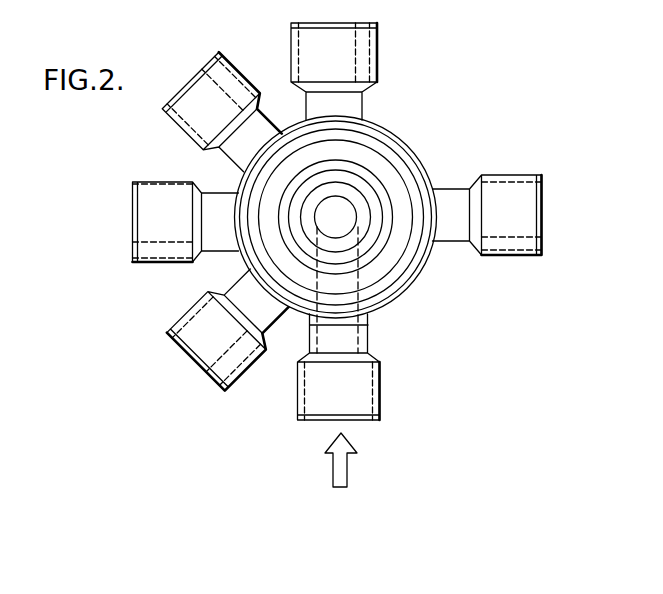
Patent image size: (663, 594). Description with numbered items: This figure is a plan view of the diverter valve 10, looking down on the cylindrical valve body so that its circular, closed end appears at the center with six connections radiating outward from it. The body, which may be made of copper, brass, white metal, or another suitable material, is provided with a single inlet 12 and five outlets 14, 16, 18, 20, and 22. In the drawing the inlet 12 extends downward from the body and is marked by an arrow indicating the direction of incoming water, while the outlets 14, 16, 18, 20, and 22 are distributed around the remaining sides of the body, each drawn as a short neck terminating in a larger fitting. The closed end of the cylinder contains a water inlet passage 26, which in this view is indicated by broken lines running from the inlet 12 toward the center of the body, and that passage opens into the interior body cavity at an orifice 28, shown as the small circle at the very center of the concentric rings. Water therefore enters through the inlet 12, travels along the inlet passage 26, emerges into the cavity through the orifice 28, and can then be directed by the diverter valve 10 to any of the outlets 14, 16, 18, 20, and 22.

The diverter valve 10 is at (456, 314).
The inlet 12 is at (380, 390).
The outlet 14 is at (172, 325).
The outlet 16 is at (157, 181).
The outlet 18 is at (222, 52).
The outlet 20 is at (377, 47).
The outlet 22 is at (519, 174).
The water inlet passage 26 is at (362, 281).
The orifice 28 is at (347, 215).